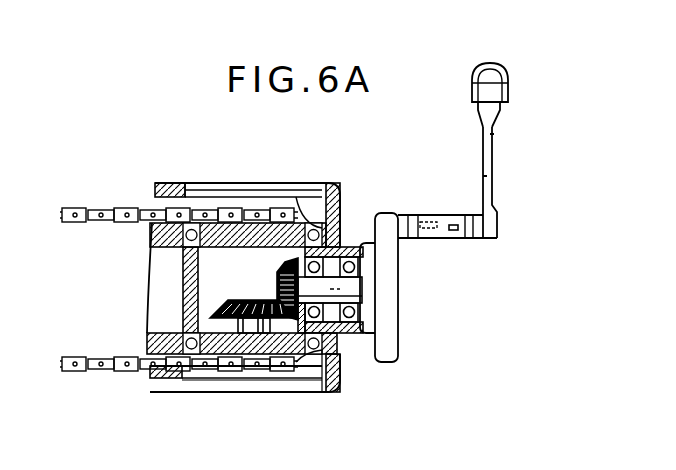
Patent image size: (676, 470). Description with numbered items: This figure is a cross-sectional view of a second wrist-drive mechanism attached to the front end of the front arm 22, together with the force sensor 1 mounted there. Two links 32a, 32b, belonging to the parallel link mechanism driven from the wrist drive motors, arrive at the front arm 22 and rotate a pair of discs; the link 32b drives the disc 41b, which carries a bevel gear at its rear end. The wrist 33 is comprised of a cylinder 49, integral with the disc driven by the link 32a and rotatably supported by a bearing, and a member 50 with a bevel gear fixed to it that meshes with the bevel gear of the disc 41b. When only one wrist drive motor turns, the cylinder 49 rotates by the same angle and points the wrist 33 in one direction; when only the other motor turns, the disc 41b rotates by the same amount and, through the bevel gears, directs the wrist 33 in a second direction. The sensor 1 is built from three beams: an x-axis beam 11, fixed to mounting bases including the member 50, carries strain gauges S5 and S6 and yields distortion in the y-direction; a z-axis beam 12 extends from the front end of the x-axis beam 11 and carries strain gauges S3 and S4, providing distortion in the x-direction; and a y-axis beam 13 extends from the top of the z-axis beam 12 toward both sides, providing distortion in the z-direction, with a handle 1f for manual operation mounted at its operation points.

The sensor 1 is at (496, 147).
The handle 1f is at (502, 75).
The x-axis beam 11 is at (462, 237).
The z-axis beam 12 is at (493, 172).
The y-axis beam 13 is at (500, 106).
The front arm 22 is at (161, 184).
The link 32a is at (204, 209).
The link 32b is at (121, 357).
The wrist 33 is at (353, 232).
The disc 41b is at (337, 376).
The cylinder 49 is at (288, 197).
The member 50 is at (389, 220).
The strain gauge S3 is at (494, 136).
The strain gauge S4 is at (484, 176).
The strain gauge S5 is at (451, 232).
The strain gauge S6 is at (429, 221).